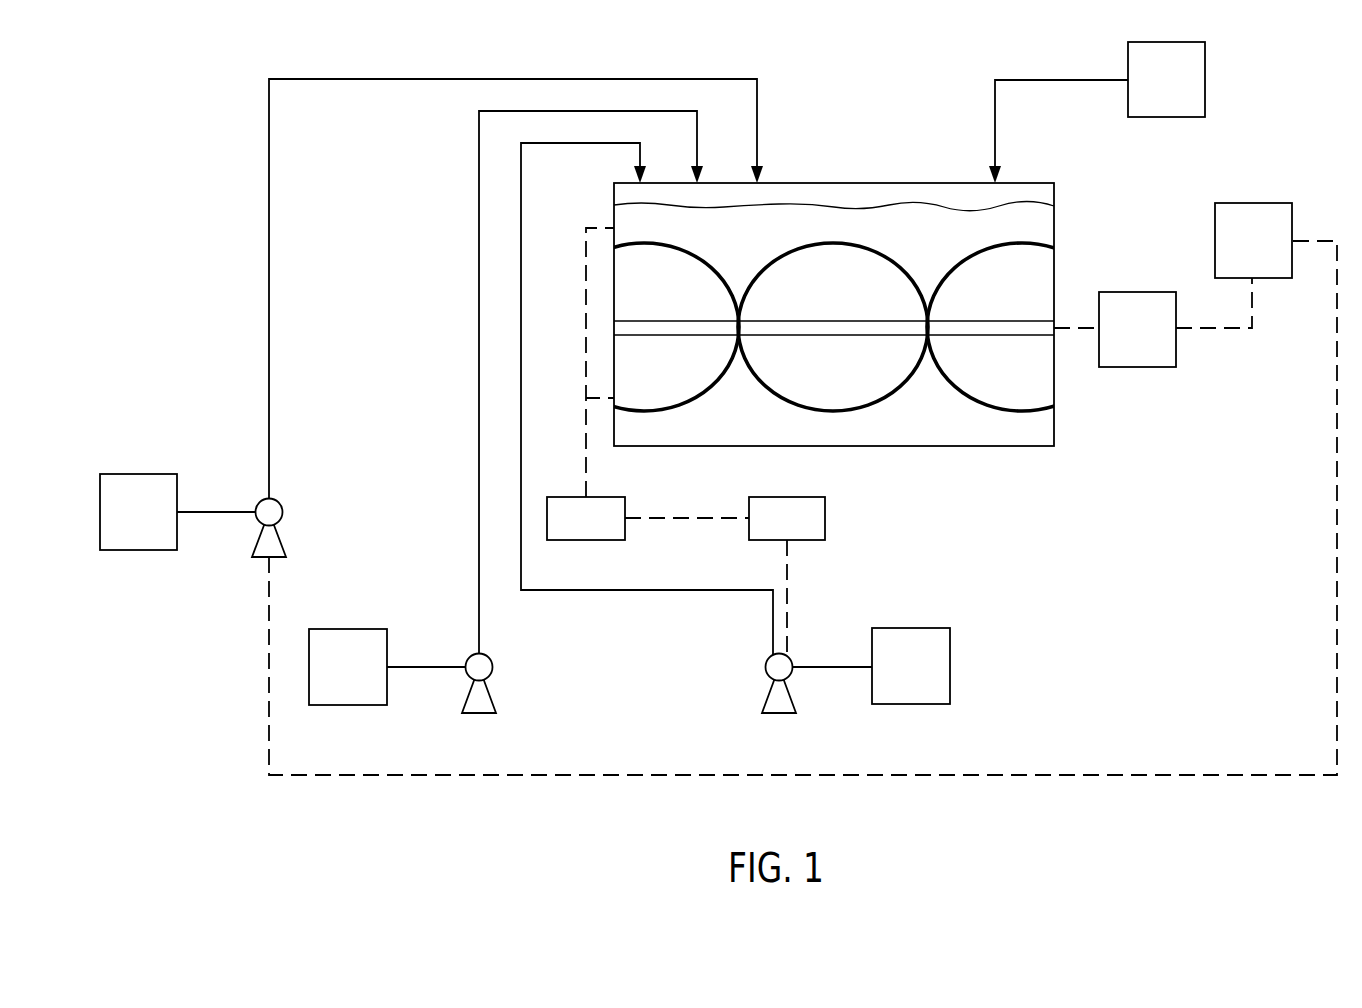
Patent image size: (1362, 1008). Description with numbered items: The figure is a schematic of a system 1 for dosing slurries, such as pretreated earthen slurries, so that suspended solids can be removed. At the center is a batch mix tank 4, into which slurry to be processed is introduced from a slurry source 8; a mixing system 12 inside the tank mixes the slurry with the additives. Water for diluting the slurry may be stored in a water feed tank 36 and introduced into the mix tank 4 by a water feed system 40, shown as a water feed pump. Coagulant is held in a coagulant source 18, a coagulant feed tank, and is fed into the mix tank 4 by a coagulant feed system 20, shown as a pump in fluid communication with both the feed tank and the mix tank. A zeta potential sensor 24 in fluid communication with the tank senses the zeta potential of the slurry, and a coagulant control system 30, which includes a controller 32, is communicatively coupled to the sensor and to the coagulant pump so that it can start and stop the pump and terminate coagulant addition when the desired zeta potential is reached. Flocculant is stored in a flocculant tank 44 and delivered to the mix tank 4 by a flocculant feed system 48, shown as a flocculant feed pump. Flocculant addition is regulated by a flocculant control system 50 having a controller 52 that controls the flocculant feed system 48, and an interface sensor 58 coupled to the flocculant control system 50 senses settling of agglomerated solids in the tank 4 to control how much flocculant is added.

The system 1 is at (169, 282).
The batch mix tank 4 is at (833, 331).
The slurry source 8 is at (1158, 93).
The mixing system 12 is at (880, 403).
The coagulant source 18 is at (124, 525).
The coagulant feed system 20 is at (283, 510).
The zeta potential sensor 24 is at (1176, 352).
The coagulant control system 30 is at (1213, 289).
The controller 32 is at (1239, 254).
The water feed tank 36 is at (334, 680).
The water feed system 40 is at (492, 697).
The flocculant tank 44 is at (897, 679).
The flocculant feed system 48 is at (766, 696).
The flocculant control system 50 is at (723, 535).
The controller 52 is at (773, 532).
The interface sensor 58 is at (572, 532).